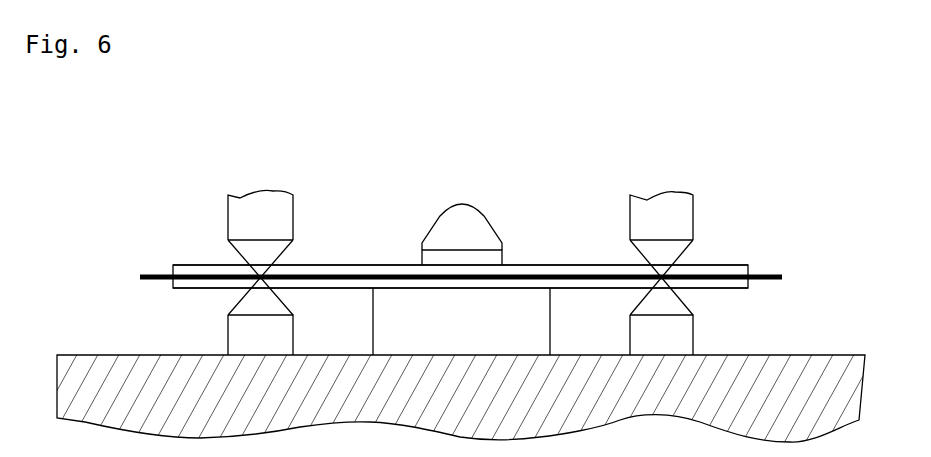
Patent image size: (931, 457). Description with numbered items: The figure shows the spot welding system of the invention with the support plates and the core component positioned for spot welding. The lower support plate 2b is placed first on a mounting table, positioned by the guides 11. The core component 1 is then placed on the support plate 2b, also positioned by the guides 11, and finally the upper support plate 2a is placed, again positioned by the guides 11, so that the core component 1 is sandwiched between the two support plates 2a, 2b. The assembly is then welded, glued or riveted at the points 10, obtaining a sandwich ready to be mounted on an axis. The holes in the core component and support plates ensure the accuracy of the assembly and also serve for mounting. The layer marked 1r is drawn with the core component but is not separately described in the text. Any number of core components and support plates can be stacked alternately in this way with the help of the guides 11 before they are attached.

The core component 1 is at (380, 270).
The sheet (thin layer) on plate 1r is at (158, 271).
The support plate 2a is at (729, 265).
The support plate 2b is at (729, 289).
The points 10 is at (262, 270).
The guides 11 is at (462, 222).